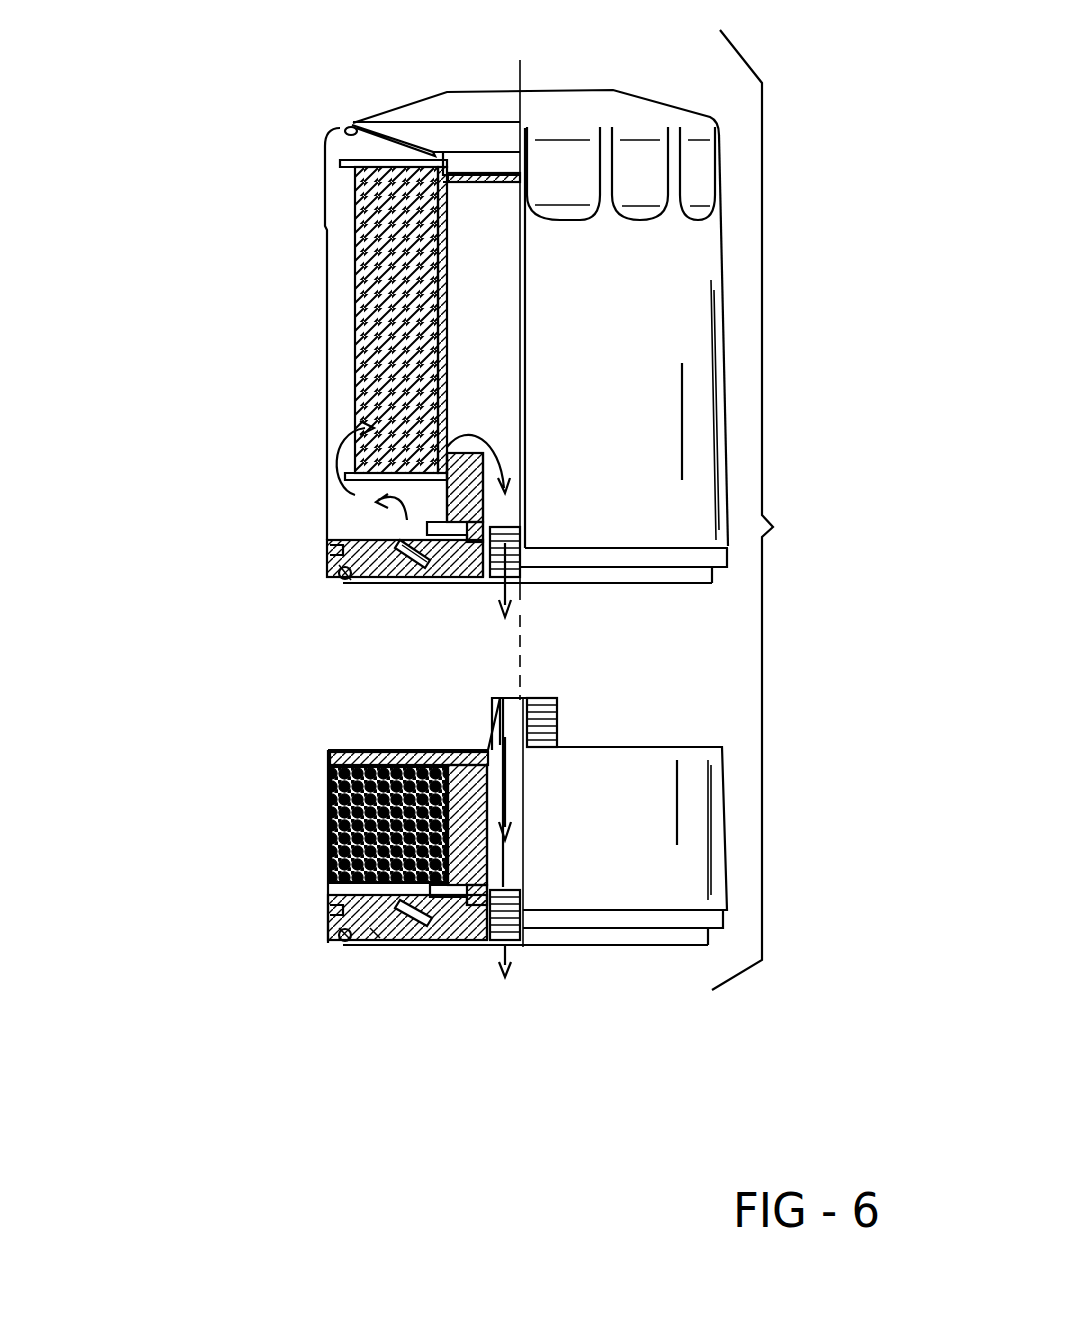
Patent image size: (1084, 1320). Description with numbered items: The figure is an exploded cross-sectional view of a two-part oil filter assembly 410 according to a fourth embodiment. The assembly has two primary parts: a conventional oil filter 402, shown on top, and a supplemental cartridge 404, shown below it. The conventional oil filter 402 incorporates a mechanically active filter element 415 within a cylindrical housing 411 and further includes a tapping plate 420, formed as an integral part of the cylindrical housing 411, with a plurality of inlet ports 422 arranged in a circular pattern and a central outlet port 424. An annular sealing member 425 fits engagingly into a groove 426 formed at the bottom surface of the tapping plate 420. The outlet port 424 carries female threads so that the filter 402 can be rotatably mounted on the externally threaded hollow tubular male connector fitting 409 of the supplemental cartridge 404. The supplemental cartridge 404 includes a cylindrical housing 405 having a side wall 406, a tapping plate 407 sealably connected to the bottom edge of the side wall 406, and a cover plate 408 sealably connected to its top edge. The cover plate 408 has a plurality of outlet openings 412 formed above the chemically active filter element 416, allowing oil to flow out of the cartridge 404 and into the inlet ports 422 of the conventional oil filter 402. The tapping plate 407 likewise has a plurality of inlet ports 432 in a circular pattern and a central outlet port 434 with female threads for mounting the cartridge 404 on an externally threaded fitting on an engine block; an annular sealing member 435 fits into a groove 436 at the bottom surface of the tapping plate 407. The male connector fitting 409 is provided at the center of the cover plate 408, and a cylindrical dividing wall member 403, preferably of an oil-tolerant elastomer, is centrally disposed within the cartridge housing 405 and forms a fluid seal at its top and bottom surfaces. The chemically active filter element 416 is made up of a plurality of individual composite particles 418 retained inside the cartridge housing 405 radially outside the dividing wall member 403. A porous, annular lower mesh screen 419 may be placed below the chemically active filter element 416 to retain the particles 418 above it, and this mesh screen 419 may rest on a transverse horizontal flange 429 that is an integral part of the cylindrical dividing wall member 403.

The conventional oil filter 402 is at (257, 224).
The mechanically active filter element 415 is at (356, 322).
The cylindrical housing 411 is at (598, 373).
The groove 426 is at (345, 575).
The annular sealing member 425 is at (343, 590).
The inlet ports 422 is at (403, 606).
The tapping plate 420 is at (457, 578).
The central outlet port 424 is at (523, 583).
The chemically active filter element 416 is at (327, 770).
The cover plate 408 is at (363, 748).
The cylindrical dividing wall member 403 is at (467, 750).
The outlet openings 412 is at (415, 750).
The hollow tubular male connector fitting 409 is at (560, 716).
The supplemental cartridge 404 is at (266, 797).
The cylindrical housing 405 is at (610, 848).
The composite particles 418 is at (328, 843).
The lower mesh screen 419 is at (355, 900).
The groove 436 is at (345, 940).
The inlet ports 432 is at (372, 930).
The annular sealing member 435 is at (345, 942).
The transverse horizontal flange 429 is at (403, 971).
The tapping plate 407 is at (455, 945).
The central outlet port 434 is at (510, 940).
The side wall 406 is at (560, 897).
The oil filter assembly 410 is at (805, 150).